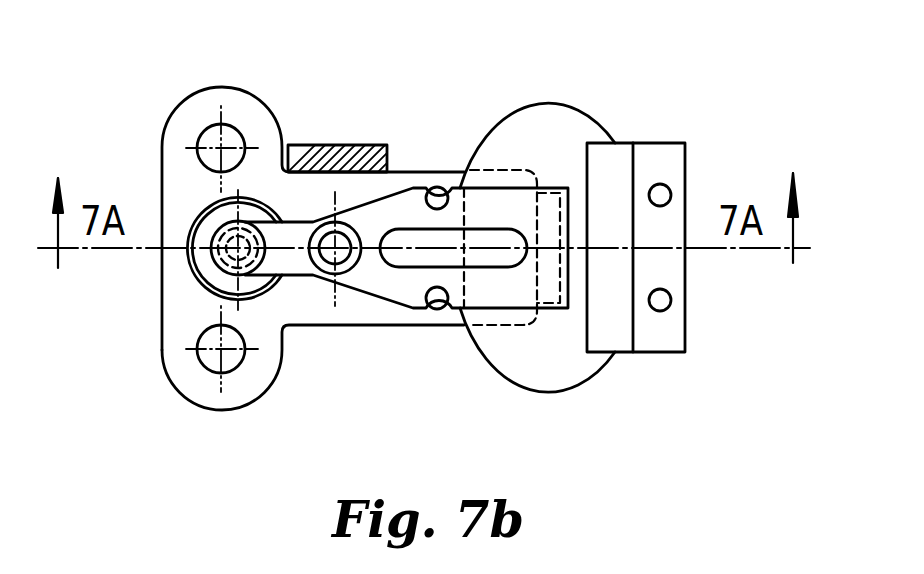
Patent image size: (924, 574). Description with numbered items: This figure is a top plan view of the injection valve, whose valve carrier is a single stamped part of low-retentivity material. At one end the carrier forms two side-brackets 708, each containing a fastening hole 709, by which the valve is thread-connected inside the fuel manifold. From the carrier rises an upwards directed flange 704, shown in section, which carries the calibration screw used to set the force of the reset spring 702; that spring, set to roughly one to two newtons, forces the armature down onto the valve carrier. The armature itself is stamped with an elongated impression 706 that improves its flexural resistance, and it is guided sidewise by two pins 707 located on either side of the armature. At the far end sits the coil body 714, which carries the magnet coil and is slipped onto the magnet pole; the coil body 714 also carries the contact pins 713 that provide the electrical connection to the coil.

The reset spring 702 is at (352, 264).
The upwards directed flange 704 is at (337, 145).
The impression 706 is at (400, 235).
The pins 707 is at (442, 182).
The side-brackets 708 is at (197, 117).
The fastening holes 709 is at (236, 134).
The contact pins 713 is at (672, 190).
The coil body 714 is at (570, 140).